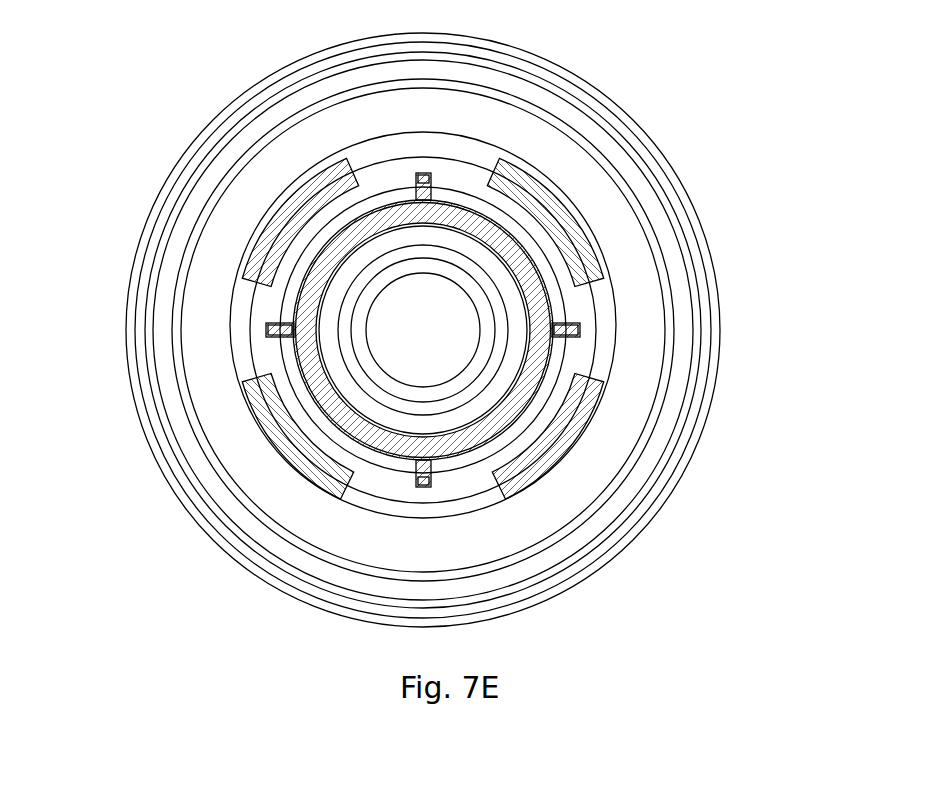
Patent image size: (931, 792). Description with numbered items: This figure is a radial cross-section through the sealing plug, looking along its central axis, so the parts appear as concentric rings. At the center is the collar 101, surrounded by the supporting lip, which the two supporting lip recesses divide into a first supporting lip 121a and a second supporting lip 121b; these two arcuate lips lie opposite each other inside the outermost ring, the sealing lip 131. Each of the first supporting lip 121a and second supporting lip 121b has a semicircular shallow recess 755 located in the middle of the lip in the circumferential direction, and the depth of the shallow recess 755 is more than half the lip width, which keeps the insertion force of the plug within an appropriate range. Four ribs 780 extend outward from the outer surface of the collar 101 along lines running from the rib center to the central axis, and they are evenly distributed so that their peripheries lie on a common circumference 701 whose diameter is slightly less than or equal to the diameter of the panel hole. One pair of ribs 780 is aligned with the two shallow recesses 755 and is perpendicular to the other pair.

The sealing lip 131 is at (487, 122).
The circumference 701 is at (492, 150).
The first supporting lip 121a is at (275, 243).
The second supporting lip 121b is at (562, 247).
The shallow recess 755 is at (603, 303).
The rib 780 is at (273, 330).
The collar 101 is at (312, 385).